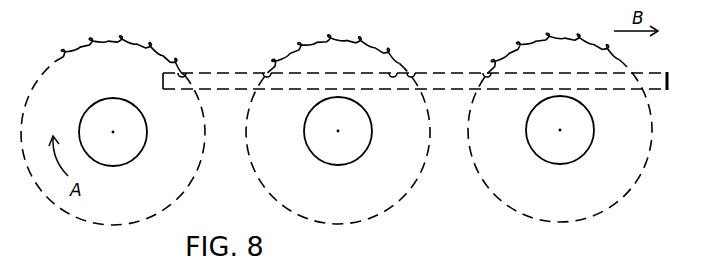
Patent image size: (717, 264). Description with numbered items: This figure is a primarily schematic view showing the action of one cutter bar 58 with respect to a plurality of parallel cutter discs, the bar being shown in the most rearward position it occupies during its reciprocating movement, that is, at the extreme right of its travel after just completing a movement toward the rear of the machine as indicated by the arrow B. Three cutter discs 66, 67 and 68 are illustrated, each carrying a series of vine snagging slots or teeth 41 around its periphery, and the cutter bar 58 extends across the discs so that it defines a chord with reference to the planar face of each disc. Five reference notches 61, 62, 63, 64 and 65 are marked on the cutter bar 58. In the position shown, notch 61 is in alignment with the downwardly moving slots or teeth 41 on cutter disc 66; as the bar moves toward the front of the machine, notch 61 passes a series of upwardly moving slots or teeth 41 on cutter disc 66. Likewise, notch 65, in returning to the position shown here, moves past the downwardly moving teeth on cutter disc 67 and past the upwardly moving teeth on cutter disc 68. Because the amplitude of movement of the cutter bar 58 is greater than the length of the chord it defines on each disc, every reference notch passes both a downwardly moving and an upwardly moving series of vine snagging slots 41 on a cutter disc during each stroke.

The vine snagging slots 41 is at (115, 40).
The cutter bar 58 is at (655, 84).
The reference notch 61 is at (182, 73).
The reference notch 62 is at (266, 72).
The reference notch 63 is at (394, 72).
The reference notch 64 is at (412, 72).
The reference notch 65 is at (488, 72).
The cutter disc 66 is at (66, 70).
The cutter disc 67 is at (353, 224).
The cutter disc 68 is at (598, 213).